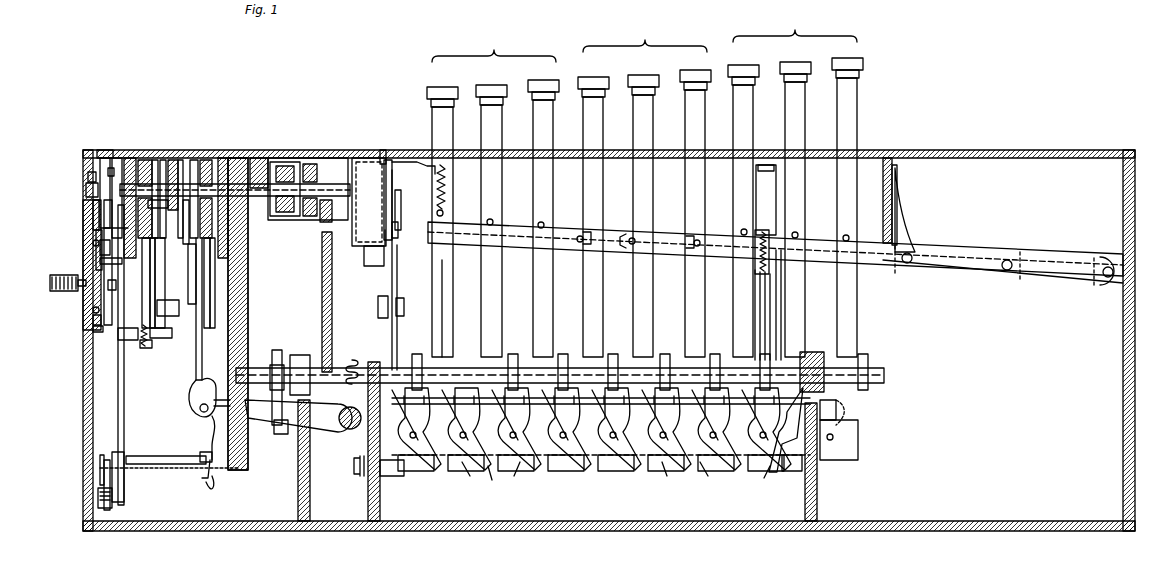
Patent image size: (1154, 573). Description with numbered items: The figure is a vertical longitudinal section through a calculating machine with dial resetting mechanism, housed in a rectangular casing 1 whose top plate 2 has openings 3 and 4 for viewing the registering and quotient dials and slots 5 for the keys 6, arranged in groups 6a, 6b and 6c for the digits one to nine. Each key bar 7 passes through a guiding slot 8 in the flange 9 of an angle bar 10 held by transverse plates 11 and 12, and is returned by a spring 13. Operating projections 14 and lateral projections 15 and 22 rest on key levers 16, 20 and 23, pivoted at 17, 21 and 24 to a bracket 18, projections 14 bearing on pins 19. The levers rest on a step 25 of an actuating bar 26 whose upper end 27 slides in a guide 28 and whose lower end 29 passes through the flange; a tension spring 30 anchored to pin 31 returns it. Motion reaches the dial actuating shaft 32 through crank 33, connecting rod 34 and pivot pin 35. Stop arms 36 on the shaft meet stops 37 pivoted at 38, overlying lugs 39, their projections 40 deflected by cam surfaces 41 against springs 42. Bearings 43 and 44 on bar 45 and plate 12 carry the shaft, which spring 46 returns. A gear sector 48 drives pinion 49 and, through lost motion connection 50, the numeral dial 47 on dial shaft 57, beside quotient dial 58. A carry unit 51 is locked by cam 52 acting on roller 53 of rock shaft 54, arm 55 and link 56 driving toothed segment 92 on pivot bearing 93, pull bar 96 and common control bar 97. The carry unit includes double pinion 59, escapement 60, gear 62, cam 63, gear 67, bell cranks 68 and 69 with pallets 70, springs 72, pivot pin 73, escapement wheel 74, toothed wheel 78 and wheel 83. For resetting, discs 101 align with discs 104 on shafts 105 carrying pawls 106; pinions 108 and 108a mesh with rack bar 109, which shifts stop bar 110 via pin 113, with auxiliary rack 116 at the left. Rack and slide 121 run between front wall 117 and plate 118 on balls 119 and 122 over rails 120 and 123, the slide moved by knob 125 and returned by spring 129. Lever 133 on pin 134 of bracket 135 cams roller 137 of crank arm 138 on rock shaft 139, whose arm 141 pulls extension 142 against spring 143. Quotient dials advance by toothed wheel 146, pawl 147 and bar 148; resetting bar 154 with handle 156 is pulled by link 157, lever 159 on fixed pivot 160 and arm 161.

The casing 1 is at (762, 531).
The top plate 2 is at (978, 154).
The opening 3 is at (290, 158).
The opening 4 is at (365, 158).
The slot 5 is at (455, 152).
The key 6 is at (440, 88).
The group of keys 6a is at (494, 48).
The group of keys 6b is at (645, 38).
The group of keys 6c is at (795, 28).
The key bar 7 is at (448, 284).
The guiding slot 8 is at (765, 480).
The flange 9 is at (514, 477).
The angle bar 10 is at (670, 477).
The transverse plate 11 is at (381, 503).
The transverse plate 12 is at (818, 503).
The spring 13 is at (446, 192).
The operating projection 14 is at (584, 236).
The lateral projection 15 is at (538, 223).
The key lever 16 is at (520, 246).
The pivot 17 is at (912, 270).
The bracket 18 is at (910, 215).
The pin 19 is at (579, 244).
The key lever 20 is at (623, 250).
The pivot point 21 is at (1008, 276).
The lateral projection 22 is at (741, 230).
The key lever 23 is at (1068, 276).
The pivot point 24 is at (1104, 284).
The step 25 is at (753, 276).
The actuating bar 26 is at (782, 306).
The upper end 27 is at (778, 296).
The guide 28 is at (776, 196).
The lower end 29 is at (788, 473).
The tension spring 30 is at (770, 255).
The pin 31 is at (764, 232).
The dial actuating shaft 32 is at (884, 376).
The crank 33 is at (768, 312).
The connecting rod 34 is at (763, 305).
The pivot pin 35 is at (758, 290).
The stop arm 36 is at (417, 356).
The stop 37 is at (845, 410).
The pivot 38 is at (432, 470).
The lug 39 is at (426, 410).
The projection 40 is at (490, 482).
The cam surface 41 is at (586, 478).
The spring 42 is at (522, 438).
The bearing 43 is at (300, 355).
The bearing 44 is at (812, 352).
The transverse supporting bar 45 is at (311, 500).
The spring 46 is at (356, 360).
The numeral dial 47 is at (285, 217).
The gear sector 48 is at (332, 293).
The dial driving pinion 49 is at (322, 224).
The lost motion connection 50 is at (312, 164).
The carry mechanism unit 51 is at (204, 160).
The cam 52 is at (277, 350).
The roller 53 is at (281, 434).
The rock shaft 54 is at (350, 430).
The arm 55 is at (222, 406).
The link 56 is at (203, 368).
The dial shaft 57 is at (256, 158).
The quotient dial 58 is at (370, 252).
The double pinion 59 is at (172, 160).
The escapement mechanism 60 is at (166, 152).
The gear 62 is at (159, 220).
The cam 63 is at (150, 257).
The gear 67 is at (146, 160).
The bell crank lever 68 is at (188, 293).
The bell crank lever 69 is at (186, 287).
The pallet 70 is at (240, 255).
The spring 72 is at (152, 334).
The pivot pin 73 is at (172, 330).
The escapement wheel 74 is at (196, 162).
The toothed wheel 78 is at (192, 186).
The wheel 83 is at (178, 158).
The toothed segment 92 is at (192, 246).
The pivot bearing 93 is at (180, 296).
The pull bar 96 is at (189, 232).
The common control bar 97 is at (186, 160).
The disc 101 is at (122, 160).
The disc 104 is at (98, 158).
The shaft 105 is at (86, 192).
The pawl 106 is at (112, 158).
The pinion 108 is at (88, 176).
The pinion 108a is at (93, 214).
The rack bar 109 is at (84, 232).
The stop bar 110 is at (114, 262).
The pin 113 is at (96, 236).
The auxiliary rack 116 is at (84, 152).
The front wall 117 is at (84, 366).
The plate 118 is at (86, 300).
The anti-friction ball 119 is at (92, 244).
The supporting rail 120 is at (100, 250).
The slide 121 is at (90, 310).
The anti-friction ball 122 is at (92, 320).
The supporting rail 123 is at (90, 330).
The knob 125 is at (54, 290).
The spring 129 is at (125, 338).
The lever 133 is at (124, 368).
The pin 134 is at (99, 464).
The bracket 135 is at (104, 476).
The roller 137 is at (112, 495).
The crank arm 138 is at (116, 452).
The rock shaft 139 is at (150, 458).
The arm 141 is at (204, 458).
The hook-like extension 142 is at (210, 478).
The spring 143 is at (360, 476).
The toothed wheel 146 is at (401, 205).
The reciprocating pawl 147 is at (398, 222).
The reciprocating bar 148 is at (386, 238).
The resetting bar 154 is at (390, 160).
The handle 156 is at (383, 150).
The link 157 is at (410, 160).
The lever 159 is at (394, 325).
The fixed pivot 160 is at (380, 306).
The arm 161 is at (392, 476).